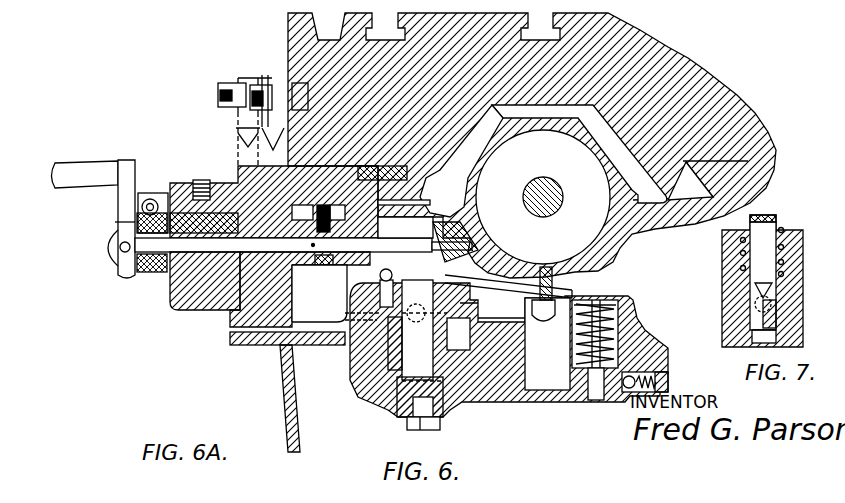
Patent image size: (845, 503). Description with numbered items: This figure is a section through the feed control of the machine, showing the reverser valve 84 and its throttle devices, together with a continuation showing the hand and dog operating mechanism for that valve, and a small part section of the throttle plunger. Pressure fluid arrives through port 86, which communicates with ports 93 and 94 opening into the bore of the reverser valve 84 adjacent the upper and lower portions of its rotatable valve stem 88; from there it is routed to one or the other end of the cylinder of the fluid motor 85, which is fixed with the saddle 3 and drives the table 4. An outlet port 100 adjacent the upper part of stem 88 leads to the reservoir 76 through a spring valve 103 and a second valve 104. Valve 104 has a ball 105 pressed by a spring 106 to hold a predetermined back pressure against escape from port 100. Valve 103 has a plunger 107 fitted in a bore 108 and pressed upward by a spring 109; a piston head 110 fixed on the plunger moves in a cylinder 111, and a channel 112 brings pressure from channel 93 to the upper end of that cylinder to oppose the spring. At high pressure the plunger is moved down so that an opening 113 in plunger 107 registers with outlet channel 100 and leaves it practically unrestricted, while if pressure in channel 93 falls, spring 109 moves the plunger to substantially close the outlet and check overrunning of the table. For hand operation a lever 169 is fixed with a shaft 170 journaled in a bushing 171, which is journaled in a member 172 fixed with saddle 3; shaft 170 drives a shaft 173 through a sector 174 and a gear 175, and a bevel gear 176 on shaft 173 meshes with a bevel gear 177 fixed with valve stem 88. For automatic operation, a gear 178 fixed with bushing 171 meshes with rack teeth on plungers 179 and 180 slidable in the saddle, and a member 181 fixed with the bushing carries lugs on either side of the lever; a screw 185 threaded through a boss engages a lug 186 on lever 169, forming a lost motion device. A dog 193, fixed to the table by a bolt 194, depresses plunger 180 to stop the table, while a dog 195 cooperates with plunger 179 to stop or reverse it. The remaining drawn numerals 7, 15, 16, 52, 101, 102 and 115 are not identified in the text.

In FIG. 6, the saddle 3 is at (772, 176).
In FIG. 6, the table 4 is at (688, 73).
In FIG. 6, the valve stem 7 is at (594, 396).
In FIG. 6, the fluid passage 15 is at (350, 330).
In FIG. 6, the port 16 is at (353, 383).
In FIG. 6A, the base flange 52 is at (231, 326).
In FIG. 6A, the reservoir 76 is at (285, 362).
In FIG. 6, the reverser valve 84 is at (372, 375).
In FIG. 6, the fluid motor 85 is at (628, 218).
In FIG. 6, the port 86 is at (389, 365).
In FIG. 6, the valve stem 88 is at (424, 330).
In FIG. 6, the port 93 is at (378, 345).
In FIG. 6, the port 94 is at (398, 400).
In FIG. 6, the port 100 is at (498, 400).
In FIG. 7, the port 100 is at (770, 308).
In FIG. 6, the nut 101 is at (466, 402).
In FIG. 6, the port 102 is at (447, 370).
In FIG. 6, the spring valve 103 is at (641, 321).
In FIG. 6, the valve 104 is at (662, 352).
In FIG. 6, the ball 105 is at (612, 376).
In FIG. 6, the spring 106 is at (668, 366).
In FIG. 6, the plunger 107 is at (603, 400).
In FIG. 7, the plunger 107 is at (752, 297).
In FIG. 6, the bore 108 is at (606, 400).
In FIG. 7, the bore 108 is at (768, 335).
In FIG. 6, the spring 109 is at (568, 340).
In FIG. 7, the spring 109 is at (781, 247).
In FIG. 6, the piston head 110 is at (600, 298).
In FIG. 6, the cylinder 111 is at (606, 318).
In FIG. 6, the pipe or channel 112 is at (478, 284).
In FIG. 6, the opening 113 is at (598, 393).
In FIG. 7, the opening 113 is at (770, 292).
In FIG. 6, the passage 115 is at (478, 316).
In FIG. 6A, the lever 169 is at (78, 143).
In FIG. 6A, the shaft 170 is at (173, 250).
In FIG. 6A, the bushing 171 is at (200, 272).
In FIG. 6A, the member 172 is at (198, 305).
In FIG. 6, the shaft 173 is at (420, 228).
In FIG. 6A, the sector 174 is at (334, 283).
In FIG. 6A, the gear 175 is at (318, 252).
In FIG. 6, the bevel gear 176 is at (440, 161).
In FIG. 6, the bevel gear 177 is at (445, 262).
In FIG. 6A, the gear 178 is at (218, 313).
In FIG. 6A, the plunger 179 is at (246, 155).
In FIG. 6A, the plunger 180 is at (243, 158).
In FIG. 6A, the member 181 is at (120, 266).
In FIG. 6A, the screw 185 is at (153, 198).
In FIG. 6A, the lug 186 is at (150, 198).
In FIG. 6A, the dog 193 is at (246, 80).
In FIG. 6A, the bolt 194 is at (222, 95).
In FIG. 6A, the dog 195 is at (272, 83).